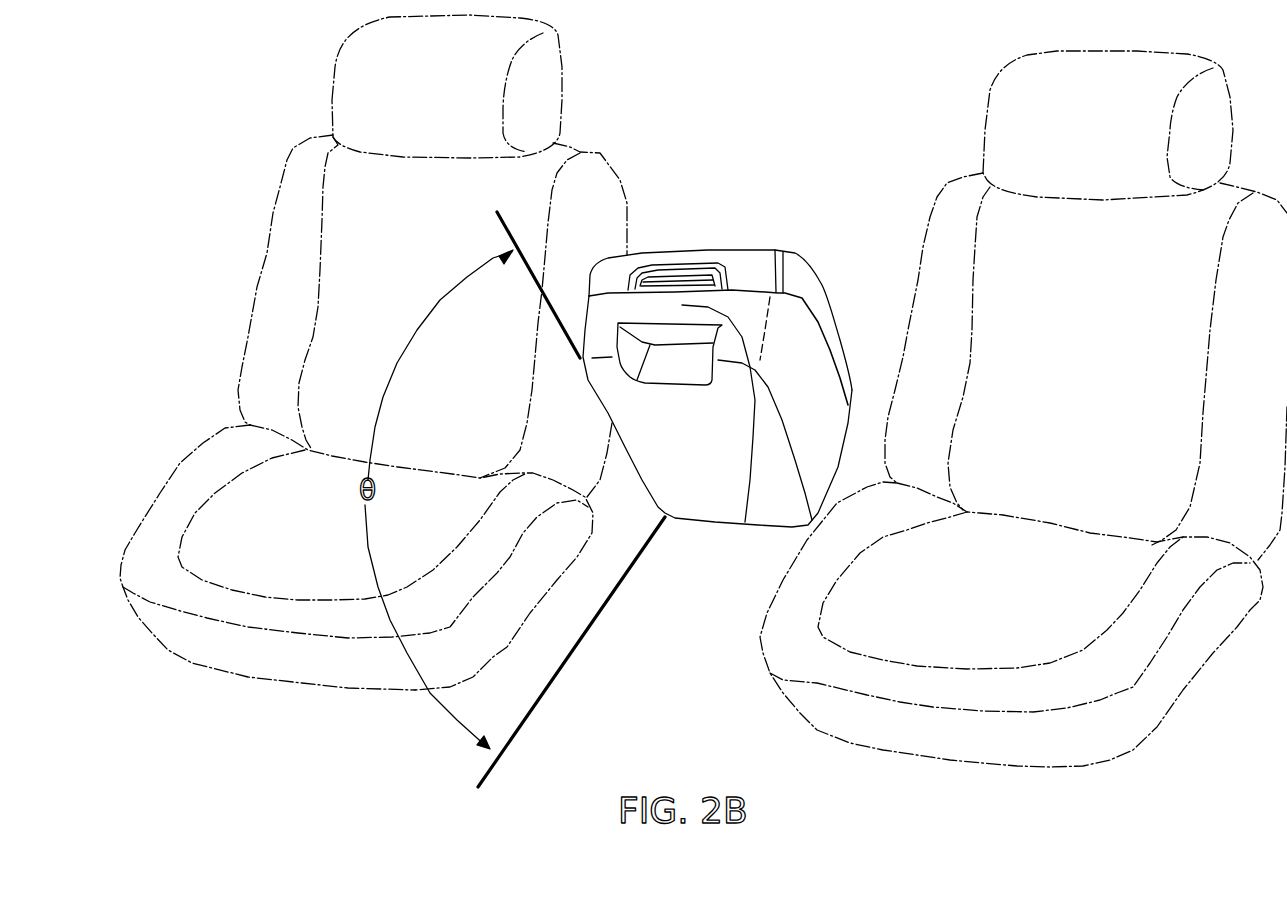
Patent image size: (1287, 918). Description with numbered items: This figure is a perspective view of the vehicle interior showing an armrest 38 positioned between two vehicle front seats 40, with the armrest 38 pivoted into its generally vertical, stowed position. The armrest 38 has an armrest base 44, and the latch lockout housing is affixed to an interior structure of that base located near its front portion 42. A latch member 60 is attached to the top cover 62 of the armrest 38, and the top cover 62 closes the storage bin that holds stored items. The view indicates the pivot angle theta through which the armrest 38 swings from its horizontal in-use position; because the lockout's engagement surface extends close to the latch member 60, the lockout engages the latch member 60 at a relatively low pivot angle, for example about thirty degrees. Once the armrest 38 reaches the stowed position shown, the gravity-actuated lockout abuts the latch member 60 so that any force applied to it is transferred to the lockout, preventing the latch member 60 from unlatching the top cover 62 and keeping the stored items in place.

The armrest 38 is at (724, 382).
The vehicle front seats 40 is at (430, 252).
The front portion 42 is at (724, 432).
The armrest base 44 is at (709, 459).
The latch member 60 is at (672, 267).
The top cover 62 is at (802, 287).